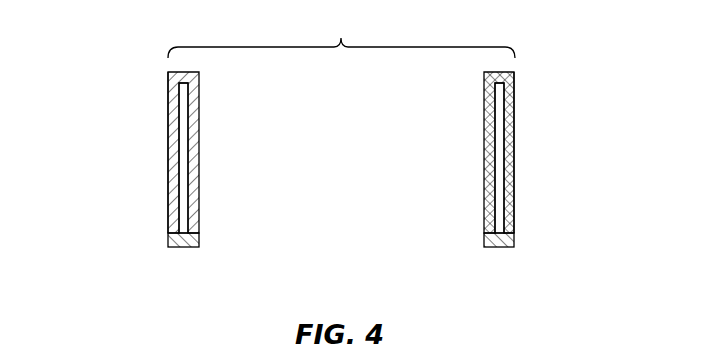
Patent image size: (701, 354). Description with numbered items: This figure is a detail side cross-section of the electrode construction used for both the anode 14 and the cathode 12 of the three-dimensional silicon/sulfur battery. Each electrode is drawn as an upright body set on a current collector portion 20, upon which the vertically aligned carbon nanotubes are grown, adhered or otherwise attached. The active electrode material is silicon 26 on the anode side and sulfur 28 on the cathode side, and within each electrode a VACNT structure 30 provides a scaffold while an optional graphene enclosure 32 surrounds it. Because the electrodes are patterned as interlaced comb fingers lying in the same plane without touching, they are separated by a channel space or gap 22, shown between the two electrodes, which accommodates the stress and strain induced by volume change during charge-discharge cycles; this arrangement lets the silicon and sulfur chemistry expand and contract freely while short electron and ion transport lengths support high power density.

The cathode 12 is at (522, 152).
The anode 14 is at (305, 161).
The current collector portion 20 is at (170, 238).
The gap 22 is at (341, 34).
The silicon 26 is at (200, 121).
The sulfur 28 is at (484, 115).
The VACNT structure 30 is at (190, 193).
The graphene enclosure 32 is at (168, 182).